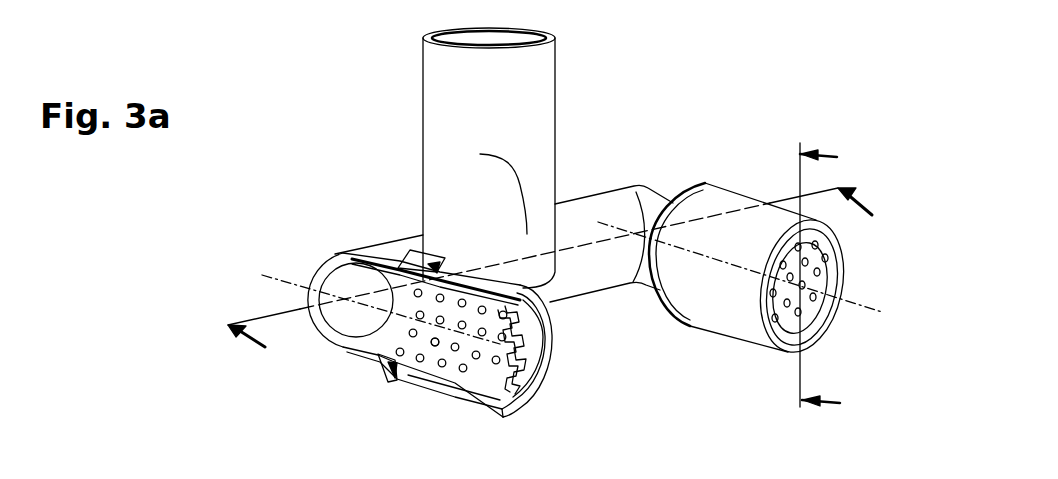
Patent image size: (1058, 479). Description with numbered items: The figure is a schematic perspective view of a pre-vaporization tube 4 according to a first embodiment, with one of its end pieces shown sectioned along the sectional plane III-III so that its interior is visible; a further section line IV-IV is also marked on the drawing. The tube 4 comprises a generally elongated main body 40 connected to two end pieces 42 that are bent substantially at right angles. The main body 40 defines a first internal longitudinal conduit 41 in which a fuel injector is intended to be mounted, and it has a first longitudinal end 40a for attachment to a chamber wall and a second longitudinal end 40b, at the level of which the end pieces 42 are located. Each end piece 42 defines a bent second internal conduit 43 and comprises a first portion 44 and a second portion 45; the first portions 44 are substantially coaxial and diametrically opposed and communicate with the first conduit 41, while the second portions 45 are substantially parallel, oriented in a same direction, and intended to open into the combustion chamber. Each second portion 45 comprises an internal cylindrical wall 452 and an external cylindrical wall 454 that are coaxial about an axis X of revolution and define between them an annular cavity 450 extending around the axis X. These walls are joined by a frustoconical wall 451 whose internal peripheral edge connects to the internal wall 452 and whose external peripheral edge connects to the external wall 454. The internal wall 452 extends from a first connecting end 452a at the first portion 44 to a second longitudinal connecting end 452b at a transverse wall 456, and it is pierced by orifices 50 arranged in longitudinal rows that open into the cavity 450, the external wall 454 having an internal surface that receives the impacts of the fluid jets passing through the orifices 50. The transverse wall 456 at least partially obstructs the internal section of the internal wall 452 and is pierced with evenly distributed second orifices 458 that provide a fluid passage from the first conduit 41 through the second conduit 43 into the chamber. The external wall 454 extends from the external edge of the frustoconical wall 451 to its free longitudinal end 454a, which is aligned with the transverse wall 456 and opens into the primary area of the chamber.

The tube 4 is at (614, 89).
The main body 40 is at (412, 88).
The first longitudinal end 40a is at (426, 36).
The second longitudinal end 40b is at (480, 154).
The first internal longitudinal conduit 41 is at (503, 33).
The end piece 42 is at (311, 200).
The second internal conduit 43 is at (342, 281).
The first portion 44 is at (450, 234).
The second portion 45 is at (365, 245).
The orifices 50 is at (435, 346).
The annular cavity 450 is at (787, 338).
The frustoconical wall 451 is at (400, 249).
The internal cylindrical wall 452 is at (347, 345).
The first connecting end 452a is at (380, 363).
The second longitudinal connecting end 452b is at (517, 393).
The external cylindrical wall 454 is at (720, 197).
The free longitudinal end 454a is at (507, 415).
The transverse wall 456 is at (833, 278).
The second orifices 458 is at (545, 330).
The axis of revolution X is at (262, 275).
The sectional plane III- III is at (829, 282).
The section line IV is at (562, 280).